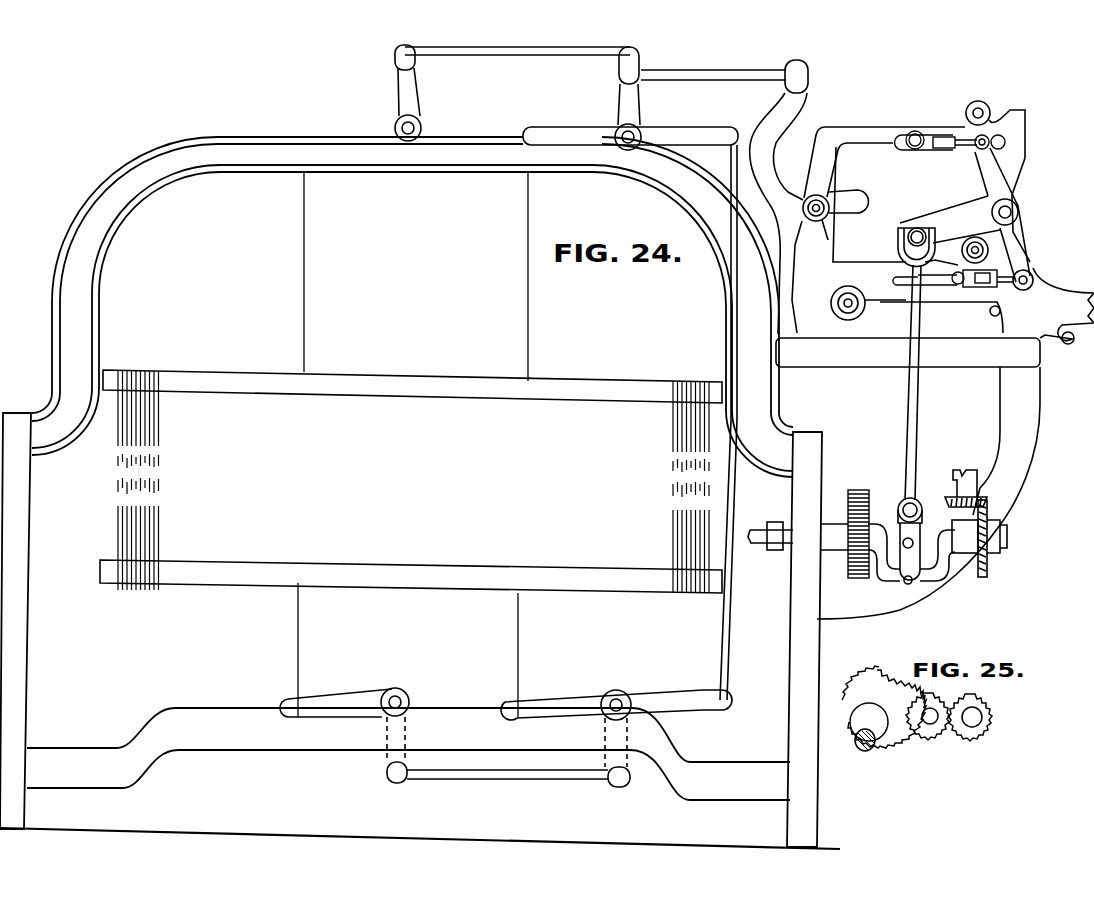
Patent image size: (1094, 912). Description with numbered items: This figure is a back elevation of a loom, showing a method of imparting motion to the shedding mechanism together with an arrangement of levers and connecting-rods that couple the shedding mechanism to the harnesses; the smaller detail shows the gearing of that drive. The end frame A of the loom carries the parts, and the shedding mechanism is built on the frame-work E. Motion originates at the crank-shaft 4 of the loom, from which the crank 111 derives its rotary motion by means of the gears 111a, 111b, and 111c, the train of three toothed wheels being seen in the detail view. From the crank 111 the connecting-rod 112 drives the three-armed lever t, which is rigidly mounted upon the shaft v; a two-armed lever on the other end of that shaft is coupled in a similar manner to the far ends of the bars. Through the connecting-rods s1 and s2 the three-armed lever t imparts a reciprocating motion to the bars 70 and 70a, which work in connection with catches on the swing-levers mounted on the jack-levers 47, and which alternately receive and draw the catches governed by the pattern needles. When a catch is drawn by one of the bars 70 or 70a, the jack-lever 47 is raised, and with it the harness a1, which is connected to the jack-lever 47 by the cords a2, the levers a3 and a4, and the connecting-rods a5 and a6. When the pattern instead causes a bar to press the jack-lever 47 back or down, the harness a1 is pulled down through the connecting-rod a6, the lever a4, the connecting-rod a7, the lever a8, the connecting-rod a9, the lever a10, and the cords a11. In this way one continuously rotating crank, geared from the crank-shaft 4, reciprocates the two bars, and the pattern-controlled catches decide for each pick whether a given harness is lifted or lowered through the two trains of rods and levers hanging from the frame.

In FIG. 24, the end frame A is at (420, 631).
In FIG. 24, the harness a1 is at (411, 481).
In FIG. 24, the cords a2 is at (425, 276).
In FIG. 24, the lever a3 is at (416, 104).
In FIG. 24, the lever a4 is at (640, 117).
In FIG. 24, the connecting-rod a5 is at (517, 64).
In FIG. 24, the connecting-rod a6 is at (724, 80).
In FIG. 24, the connecting-rod a7 is at (737, 185).
In FIG. 24, the lever a8 is at (668, 708).
In FIG. 24, the connecting-rod a9 is at (503, 775).
In FIG. 24, the lever a10 is at (385, 790).
In FIG. 24, the cords a11 is at (420, 650).
In FIG. 24, the jack-lever 47 is at (789, 213).
In FIG. 24, the reciprocating bar 70 is at (914, 132).
In FIG. 24, the connecting-rod s1 is at (927, 148).
In FIG. 24, the shaft v is at (1013, 212).
In FIG. 24, the three-armed lever t is at (949, 231).
In FIG. 24, the frame-work E is at (935, 360).
In FIG. 24, the connecting-rod s2 is at (953, 288).
In FIG. 24, the reciprocating bar 70a is at (955, 284).
In FIG. 24, the connecting-rod 112 is at (912, 432).
In FIG. 24, the crank-shaft 4 is at (757, 530).
In FIG. 25, the crank-shaft 4 is at (990, 717).
In FIG. 24, the crank 111 is at (775, 552).
In FIG. 25, the crank 111 is at (864, 723).
In FIG. 24, the gear 111c is at (855, 580).
In FIG. 25, the gear 111c is at (884, 708).
In FIG. 25, the gear 111b is at (927, 727).
In FIG. 25, the gear 111a is at (972, 733).